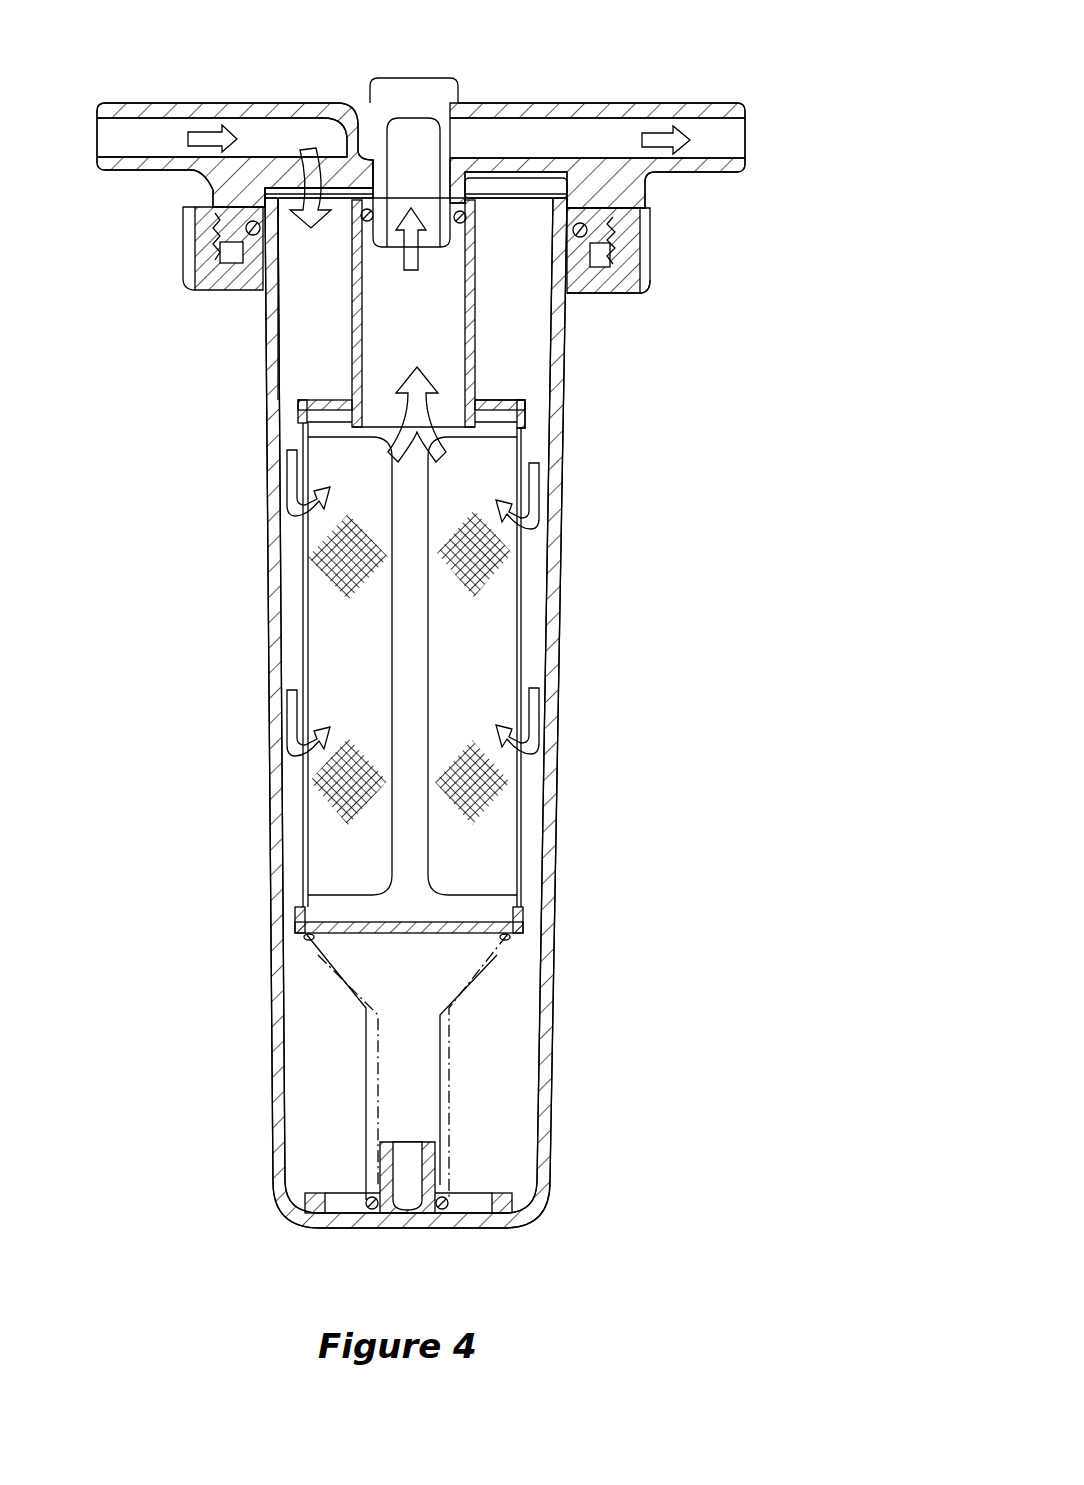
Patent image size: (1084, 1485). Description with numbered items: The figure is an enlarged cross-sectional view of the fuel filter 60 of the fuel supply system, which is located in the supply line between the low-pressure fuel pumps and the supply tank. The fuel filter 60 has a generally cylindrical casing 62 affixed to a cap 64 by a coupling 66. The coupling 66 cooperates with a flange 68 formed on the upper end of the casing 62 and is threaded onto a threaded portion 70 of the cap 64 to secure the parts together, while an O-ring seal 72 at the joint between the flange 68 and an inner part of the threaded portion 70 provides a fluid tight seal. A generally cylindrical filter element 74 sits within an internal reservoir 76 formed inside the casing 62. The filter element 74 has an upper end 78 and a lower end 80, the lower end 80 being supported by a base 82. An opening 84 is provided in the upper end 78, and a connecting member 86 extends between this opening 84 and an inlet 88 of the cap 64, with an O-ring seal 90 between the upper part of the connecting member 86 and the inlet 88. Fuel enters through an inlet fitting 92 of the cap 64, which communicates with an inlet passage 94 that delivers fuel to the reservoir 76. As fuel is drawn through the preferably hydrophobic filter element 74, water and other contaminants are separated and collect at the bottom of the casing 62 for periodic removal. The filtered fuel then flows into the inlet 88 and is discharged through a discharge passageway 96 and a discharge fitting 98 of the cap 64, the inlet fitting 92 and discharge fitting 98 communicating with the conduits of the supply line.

The fuel filter 60 is at (441, 616).
The casing 62 is at (565, 520).
The cap 64 is at (620, 186).
The coupling 66 is at (640, 293).
The flange 68 is at (600, 294).
The threaded portion 70 is at (620, 253).
The O-ring seal 72 is at (593, 222).
The filter element 74 is at (520, 565).
The internal reservoir 76 is at (527, 597).
The upper end 78 is at (522, 402).
The lower end 80 is at (470, 937).
The base 82 is at (450, 1082).
The opening 84 is at (350, 421).
The connecting member 86 is at (337, 292).
The inlet 88 is at (392, 252).
The O-ring seal 90 is at (475, 258).
The inlet fitting 92 is at (166, 107).
The inlet passage 94 is at (292, 120).
The discharge passageway 96 is at (500, 150).
The discharge fitting 98 is at (652, 107).